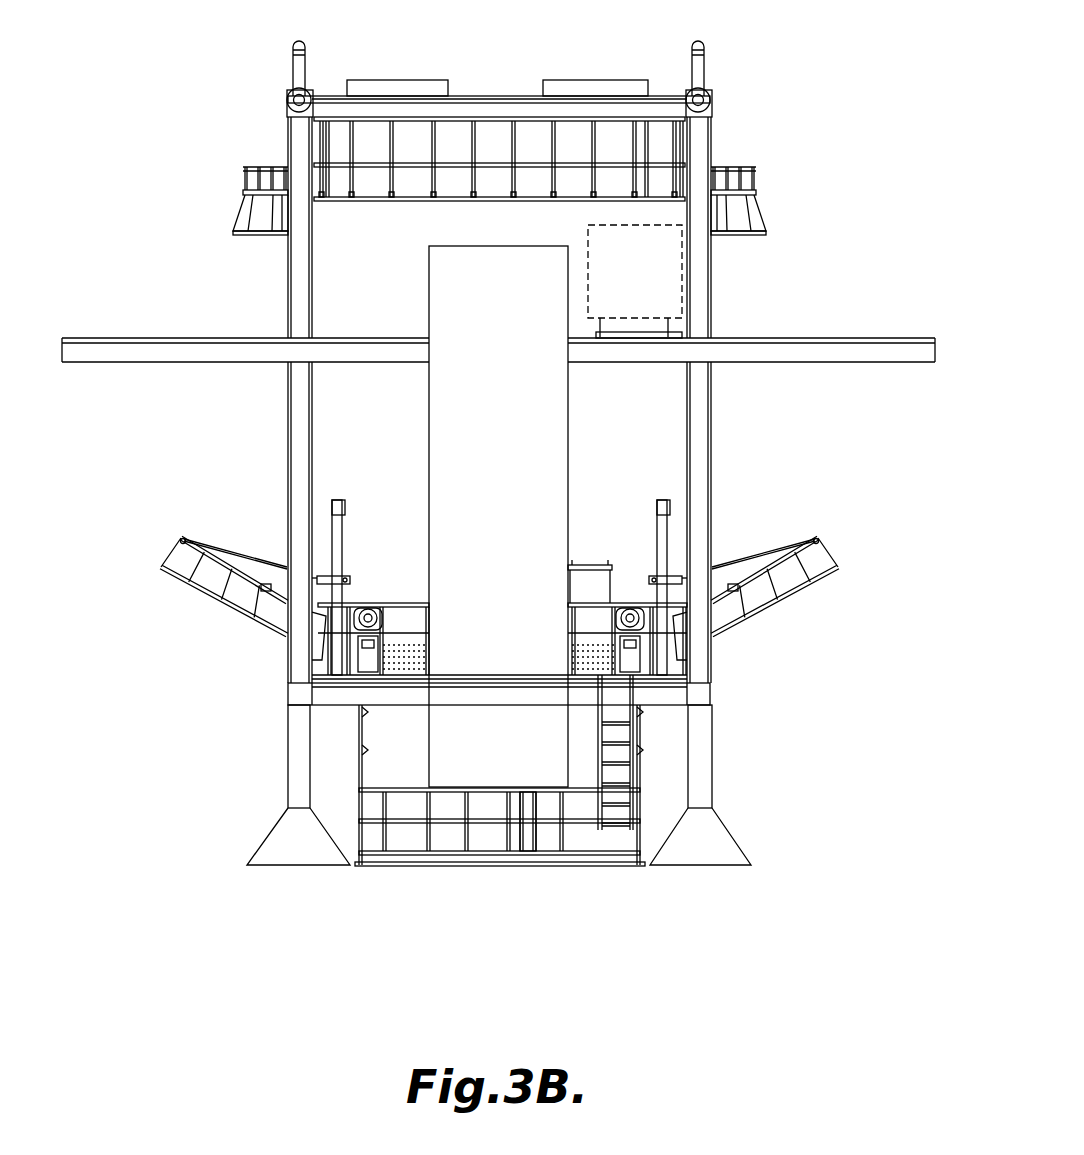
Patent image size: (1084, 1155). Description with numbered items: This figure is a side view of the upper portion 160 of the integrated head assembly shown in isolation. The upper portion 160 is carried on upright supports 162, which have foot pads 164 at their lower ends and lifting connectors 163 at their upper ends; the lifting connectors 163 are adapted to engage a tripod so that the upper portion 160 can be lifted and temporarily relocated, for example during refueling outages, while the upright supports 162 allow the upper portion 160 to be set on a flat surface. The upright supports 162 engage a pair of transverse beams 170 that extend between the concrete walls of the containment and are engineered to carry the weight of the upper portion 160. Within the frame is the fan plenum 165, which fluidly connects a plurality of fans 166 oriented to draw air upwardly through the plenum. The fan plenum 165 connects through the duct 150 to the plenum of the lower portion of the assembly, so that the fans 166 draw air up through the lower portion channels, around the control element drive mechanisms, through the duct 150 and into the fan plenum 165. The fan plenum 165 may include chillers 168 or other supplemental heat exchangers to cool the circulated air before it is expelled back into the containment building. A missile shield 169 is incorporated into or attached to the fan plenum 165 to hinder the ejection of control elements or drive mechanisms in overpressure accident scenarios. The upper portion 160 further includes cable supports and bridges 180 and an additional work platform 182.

The duct 150 is at (450, 445).
The upper portion 160 is at (764, 63).
The upright supports 162 is at (712, 730).
The lifting connectors 163 is at (293, 48).
The foot pads 164 is at (720, 842).
The fan plenum 165 is at (327, 266).
The fans 166 is at (432, 80).
The chillers 168 is at (684, 290).
The missile shield 169 is at (640, 343).
The transverse beams 170 is at (922, 353).
The cable supports and bridges 180 is at (180, 578).
The work platform 182 is at (493, 866).